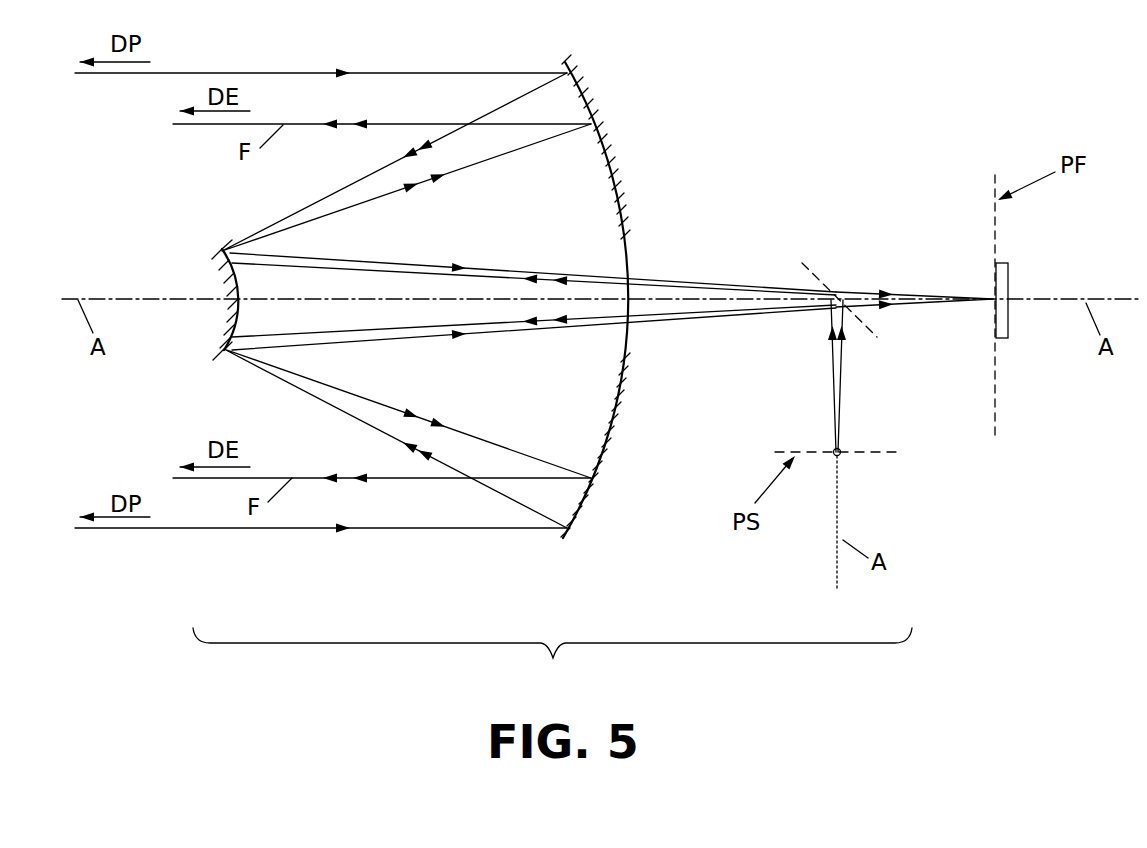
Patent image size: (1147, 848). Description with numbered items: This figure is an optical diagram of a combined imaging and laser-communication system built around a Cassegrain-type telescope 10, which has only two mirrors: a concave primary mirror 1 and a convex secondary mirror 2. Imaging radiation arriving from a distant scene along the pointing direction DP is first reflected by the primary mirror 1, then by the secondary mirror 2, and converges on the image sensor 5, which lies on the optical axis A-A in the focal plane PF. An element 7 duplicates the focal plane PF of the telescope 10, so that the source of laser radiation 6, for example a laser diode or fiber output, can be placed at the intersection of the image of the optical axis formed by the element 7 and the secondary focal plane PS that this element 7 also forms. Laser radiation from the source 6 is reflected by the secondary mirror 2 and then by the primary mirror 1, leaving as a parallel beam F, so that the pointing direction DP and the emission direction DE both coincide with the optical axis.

The primary mirror 1 is at (582, 500).
The secondary mirror 2 is at (217, 282).
The image sensor 5 is at (1010, 278).
The source of laser radiation 6 is at (841, 456).
The element 7 is at (813, 277).
The telescope 10 is at (552, 660).